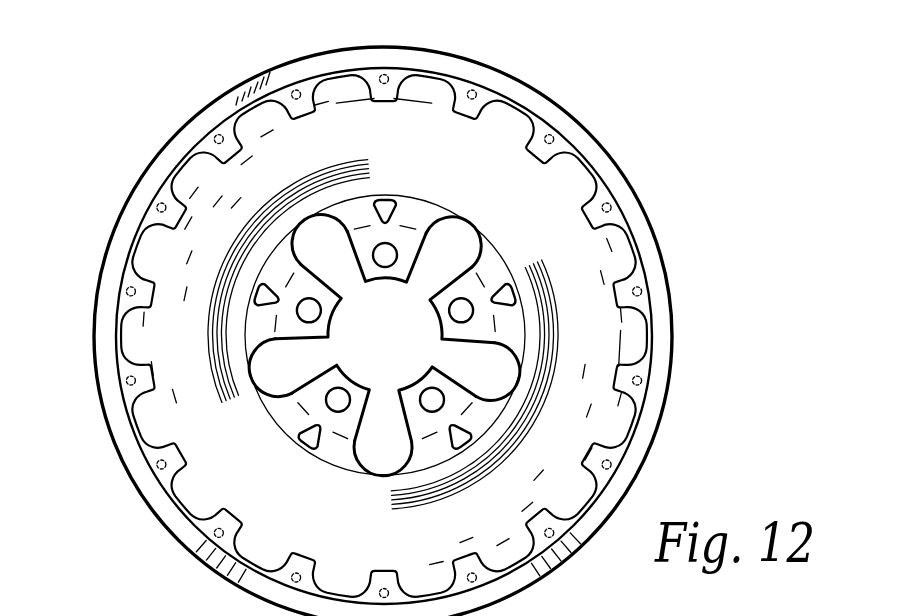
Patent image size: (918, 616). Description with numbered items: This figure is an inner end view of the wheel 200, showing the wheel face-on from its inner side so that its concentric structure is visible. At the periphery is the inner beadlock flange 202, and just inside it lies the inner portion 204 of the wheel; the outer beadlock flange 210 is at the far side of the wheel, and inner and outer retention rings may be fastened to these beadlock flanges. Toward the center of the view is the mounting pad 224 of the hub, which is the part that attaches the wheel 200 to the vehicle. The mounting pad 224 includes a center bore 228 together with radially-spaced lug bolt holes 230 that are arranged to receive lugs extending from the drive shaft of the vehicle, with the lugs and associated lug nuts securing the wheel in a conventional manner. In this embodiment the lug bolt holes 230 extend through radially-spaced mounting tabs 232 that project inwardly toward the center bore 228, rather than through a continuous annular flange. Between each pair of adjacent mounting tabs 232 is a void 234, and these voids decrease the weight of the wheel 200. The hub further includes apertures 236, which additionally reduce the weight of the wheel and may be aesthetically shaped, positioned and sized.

The wheel 200 is at (710, 90).
The inner beadlock flange 202 is at (670, 368).
The inner portion 204 is at (598, 330).
The outer beadlock flange 210 is at (584, 574).
The mounting pad 224 is at (305, 158).
The center bore 228 is at (433, 298).
The lug bolt holes 230 is at (392, 245).
The mounting tabs 232 is at (385, 277).
The void 234 is at (262, 360).
The apertures 236 is at (303, 447).